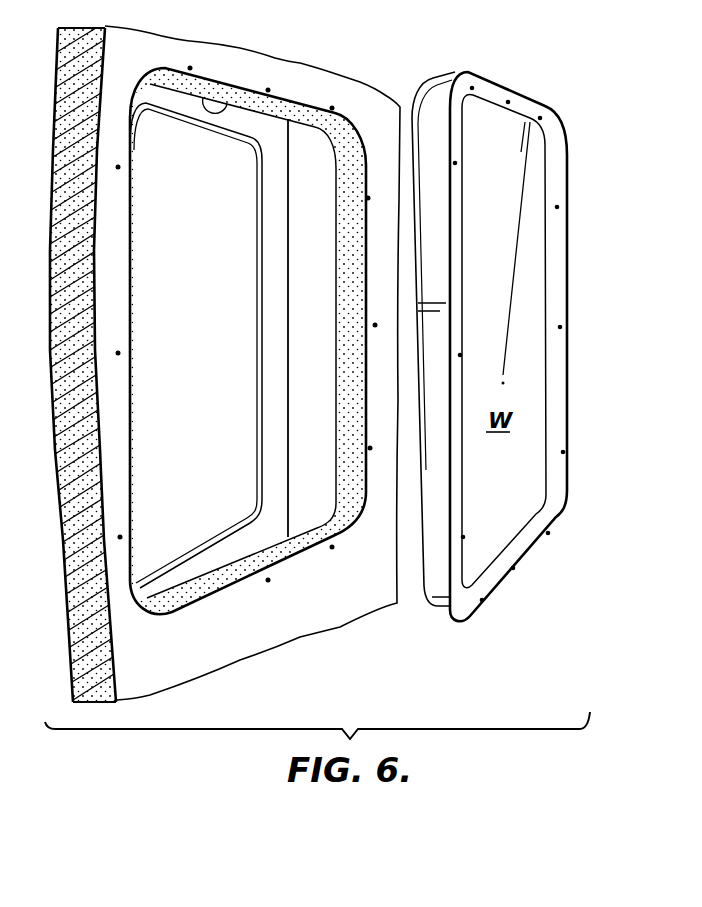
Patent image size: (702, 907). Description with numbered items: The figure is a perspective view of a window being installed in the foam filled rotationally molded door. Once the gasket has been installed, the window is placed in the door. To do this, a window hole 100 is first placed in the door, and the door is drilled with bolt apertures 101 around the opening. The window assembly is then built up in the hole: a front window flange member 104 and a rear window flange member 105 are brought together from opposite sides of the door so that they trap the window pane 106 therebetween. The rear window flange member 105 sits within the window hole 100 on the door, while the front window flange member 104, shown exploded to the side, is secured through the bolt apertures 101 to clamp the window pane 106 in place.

The window hole 100 is at (235, 96).
The bolt apertures 101 is at (193, 615).
The front window flange member 104 is at (470, 622).
The rear window flange member 105 is at (256, 327).
The window pane 106 is at (523, 257).